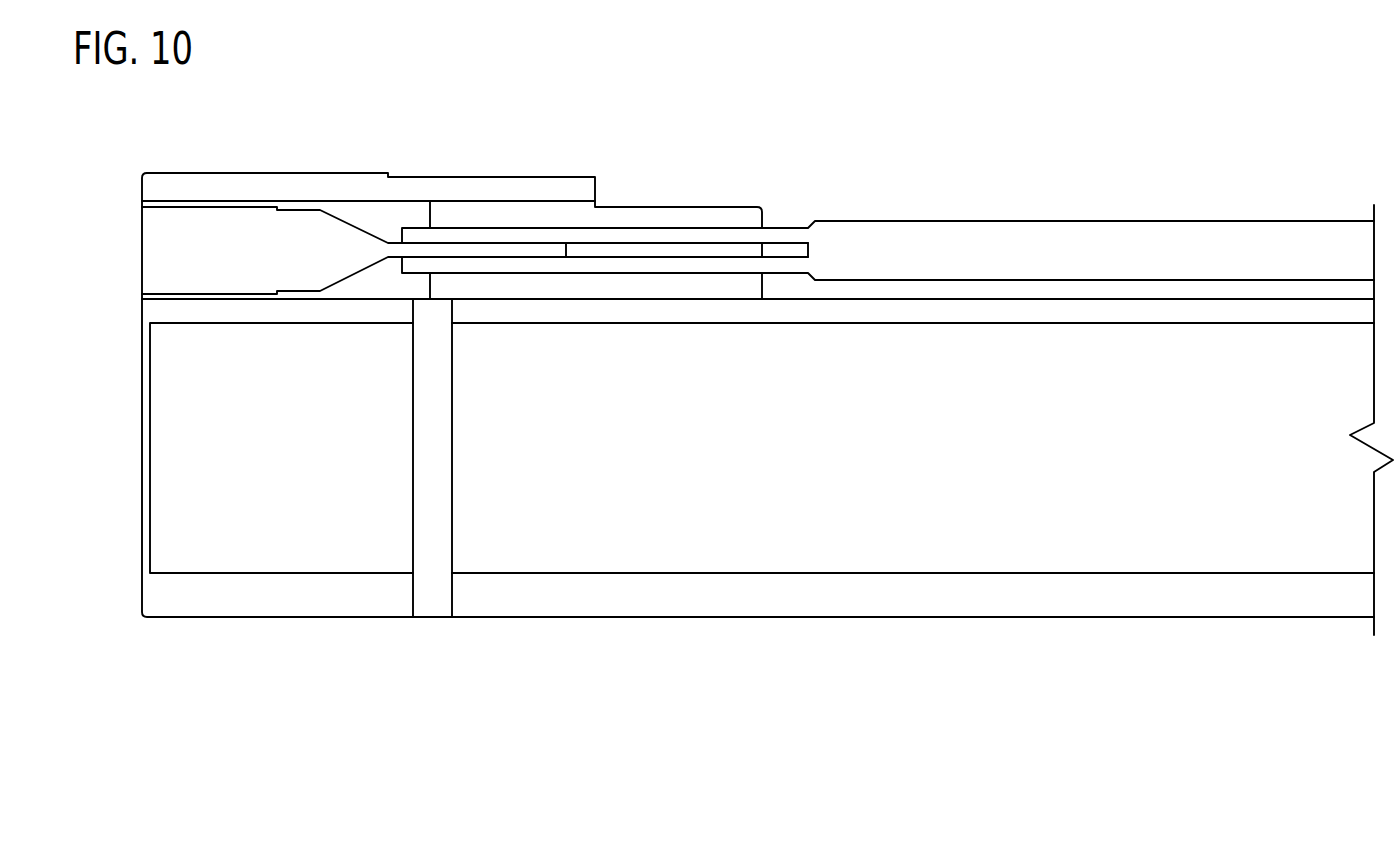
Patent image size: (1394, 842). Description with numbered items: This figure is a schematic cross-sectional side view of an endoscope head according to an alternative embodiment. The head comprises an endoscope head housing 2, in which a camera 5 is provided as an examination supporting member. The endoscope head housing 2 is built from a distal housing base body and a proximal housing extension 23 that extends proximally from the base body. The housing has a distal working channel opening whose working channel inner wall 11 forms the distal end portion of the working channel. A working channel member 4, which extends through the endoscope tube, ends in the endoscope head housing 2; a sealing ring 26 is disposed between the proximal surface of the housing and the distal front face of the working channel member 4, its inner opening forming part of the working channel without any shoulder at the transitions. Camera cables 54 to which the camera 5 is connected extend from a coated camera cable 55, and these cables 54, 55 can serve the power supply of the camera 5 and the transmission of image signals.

The endoscope head housing 2 is at (188, 600).
The working channel member 4 is at (778, 592).
The camera 5 is at (183, 243).
The working channel inner wall 11 is at (188, 477).
The proximal housing extension 23 is at (510, 607).
The sealing ring 26 is at (428, 607).
The camera cables 54 is at (638, 233).
The coated camera cable 55 is at (882, 250).